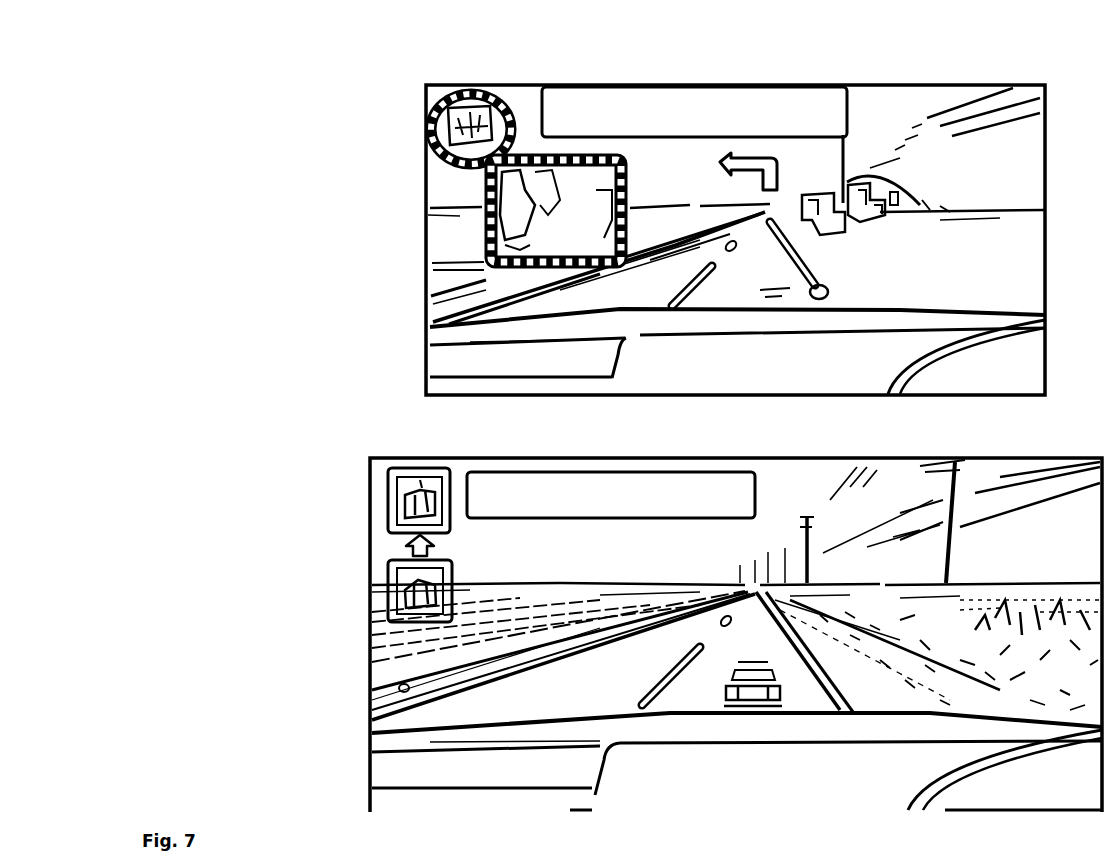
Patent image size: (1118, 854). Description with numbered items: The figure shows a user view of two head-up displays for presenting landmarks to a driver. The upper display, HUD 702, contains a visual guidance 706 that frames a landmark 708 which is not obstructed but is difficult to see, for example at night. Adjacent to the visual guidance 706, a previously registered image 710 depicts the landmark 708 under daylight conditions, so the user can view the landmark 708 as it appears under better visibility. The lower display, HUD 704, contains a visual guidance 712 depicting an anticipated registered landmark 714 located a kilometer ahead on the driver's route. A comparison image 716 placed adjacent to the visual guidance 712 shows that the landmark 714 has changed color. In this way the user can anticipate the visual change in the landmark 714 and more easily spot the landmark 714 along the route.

The HUD 702 is at (396, 64).
The HUD 704 is at (374, 423).
The visual guidance 706 is at (474, 237).
The landmark 708 is at (552, 196).
The previously registered image 710 is at (416, 152).
The visual guidance 712 is at (760, 146).
The landmark 714 is at (440, 568).
The comparison image 716 is at (376, 500).